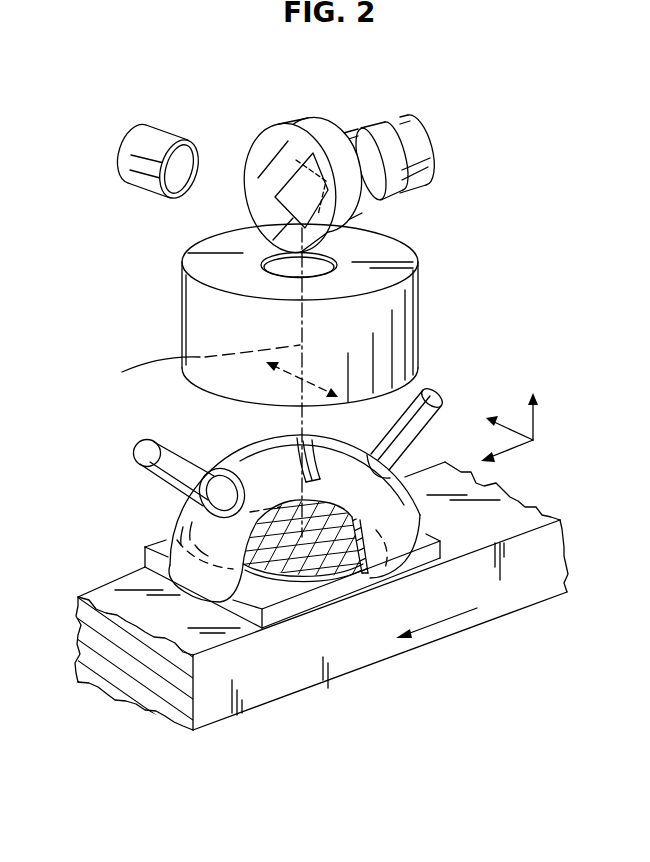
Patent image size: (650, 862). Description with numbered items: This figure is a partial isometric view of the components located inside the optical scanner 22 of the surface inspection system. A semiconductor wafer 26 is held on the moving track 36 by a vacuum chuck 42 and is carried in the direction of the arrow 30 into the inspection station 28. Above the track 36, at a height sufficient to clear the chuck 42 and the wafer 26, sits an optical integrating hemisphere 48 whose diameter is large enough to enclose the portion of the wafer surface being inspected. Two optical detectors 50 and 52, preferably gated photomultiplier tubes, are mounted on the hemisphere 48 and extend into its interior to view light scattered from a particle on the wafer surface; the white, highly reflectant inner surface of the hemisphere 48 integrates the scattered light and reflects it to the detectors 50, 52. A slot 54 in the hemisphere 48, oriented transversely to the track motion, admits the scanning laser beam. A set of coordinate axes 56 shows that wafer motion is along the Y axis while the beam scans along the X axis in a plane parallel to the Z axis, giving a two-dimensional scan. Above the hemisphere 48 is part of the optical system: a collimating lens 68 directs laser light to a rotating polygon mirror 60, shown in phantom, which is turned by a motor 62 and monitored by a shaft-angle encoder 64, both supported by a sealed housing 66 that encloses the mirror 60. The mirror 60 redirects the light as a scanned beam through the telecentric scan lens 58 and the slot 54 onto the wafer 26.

The optical scanner 22 is at (158, 322).
The semiconductor wafer 26 is at (303, 560).
The inspection station 28 is at (414, 675).
The arrow 30 is at (457, 618).
The track 36 is at (517, 513).
The vacuum chuck 42 is at (143, 549).
The optical integrating hemisphere 48 is at (185, 527).
The optical detector 50 is at (407, 423).
The optical detector 52 is at (190, 467).
The slot 54 is at (323, 468).
The set of coordinate axes 56 is at (533, 440).
The telecentric scan lens 58 is at (398, 318).
The rotating polygon mirror 60 is at (290, 177).
The motor 62 is at (420, 138).
The shaft-angle encoder 64 is at (373, 133).
The sealed housing 66 is at (300, 121).
The collimating lens 68 is at (162, 142).